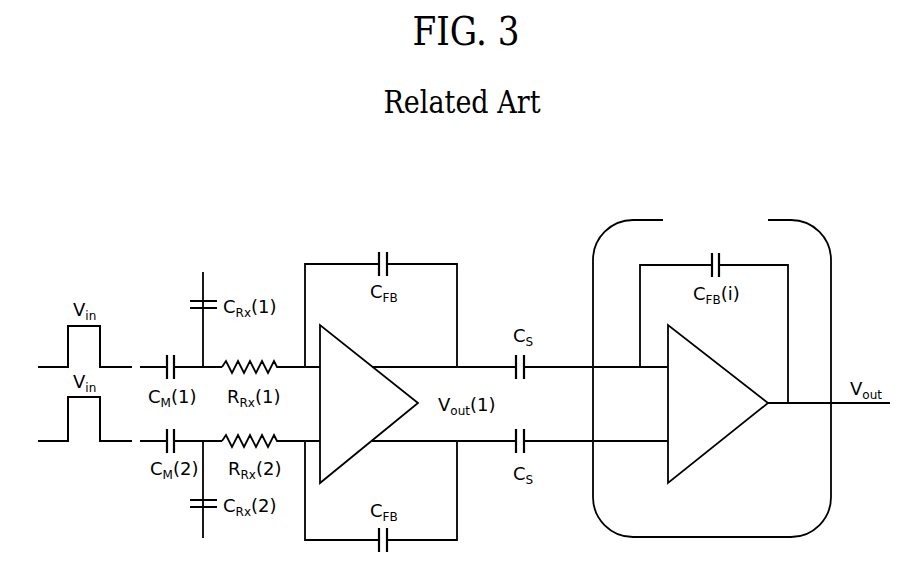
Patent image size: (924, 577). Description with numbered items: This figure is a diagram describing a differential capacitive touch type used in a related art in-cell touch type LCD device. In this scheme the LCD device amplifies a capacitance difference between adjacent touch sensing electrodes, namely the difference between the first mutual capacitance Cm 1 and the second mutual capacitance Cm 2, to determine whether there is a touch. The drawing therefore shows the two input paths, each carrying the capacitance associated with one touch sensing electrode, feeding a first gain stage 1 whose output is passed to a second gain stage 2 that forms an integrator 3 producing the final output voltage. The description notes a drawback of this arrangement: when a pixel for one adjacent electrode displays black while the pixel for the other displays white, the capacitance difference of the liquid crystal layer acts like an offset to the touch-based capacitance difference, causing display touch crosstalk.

The first gain amplifier Gain 1 is at (369, 404).
The second gain amplifier Gain 2 is at (718, 404).
The integrator 3 is at (712, 372).